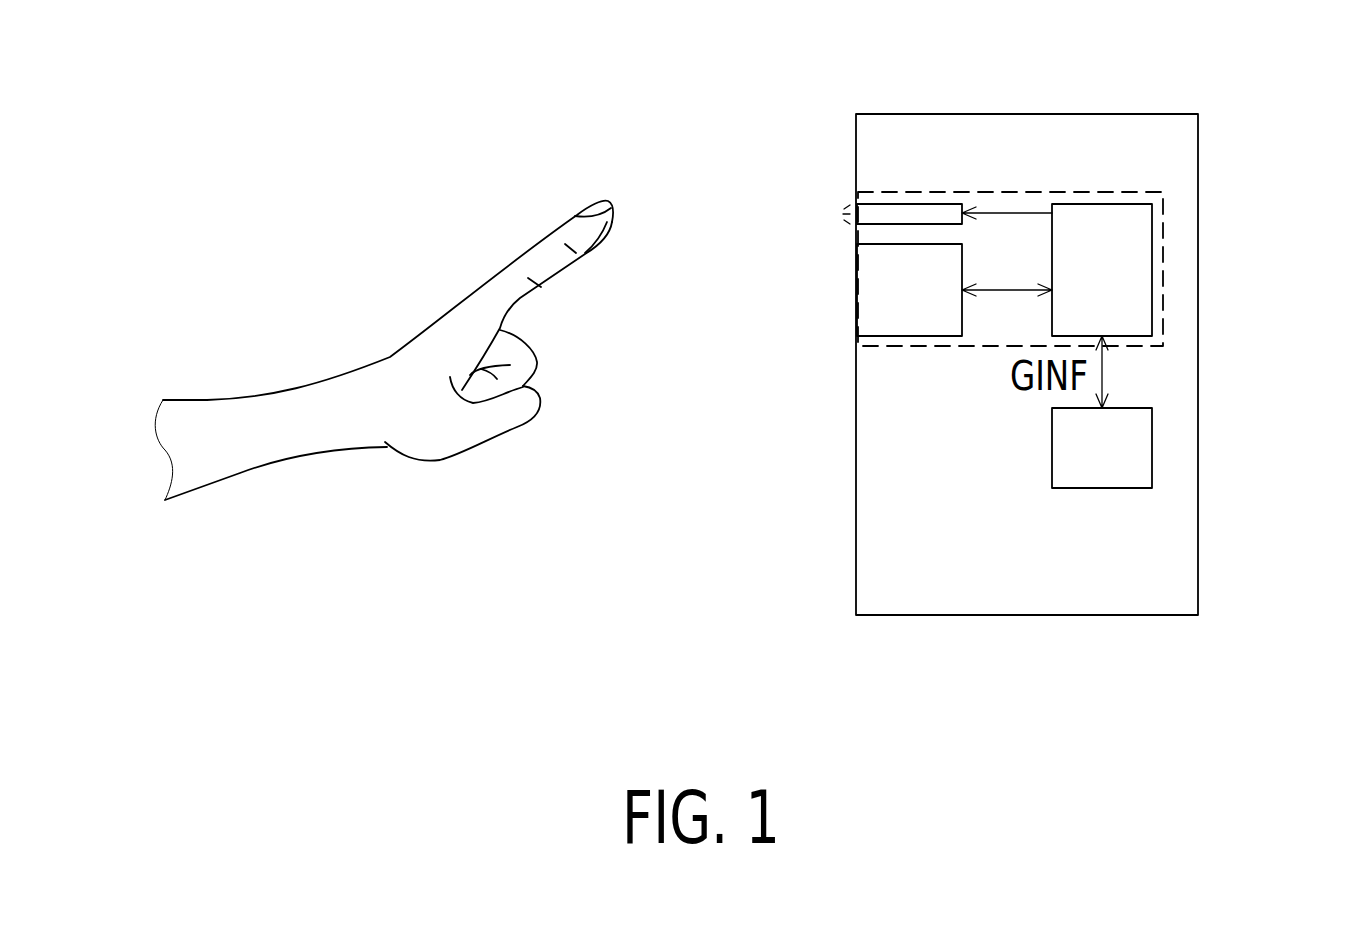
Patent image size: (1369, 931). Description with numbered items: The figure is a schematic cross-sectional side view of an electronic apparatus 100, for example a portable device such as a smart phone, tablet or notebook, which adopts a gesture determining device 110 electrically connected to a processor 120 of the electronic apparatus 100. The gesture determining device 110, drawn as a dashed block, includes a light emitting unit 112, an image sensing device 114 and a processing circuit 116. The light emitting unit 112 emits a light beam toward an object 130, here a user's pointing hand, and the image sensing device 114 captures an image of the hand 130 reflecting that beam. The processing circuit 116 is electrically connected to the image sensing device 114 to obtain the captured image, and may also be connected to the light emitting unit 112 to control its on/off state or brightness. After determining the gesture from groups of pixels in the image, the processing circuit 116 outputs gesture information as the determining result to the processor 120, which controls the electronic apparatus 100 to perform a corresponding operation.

The electronic apparatus 100 is at (1198, 142).
The gesture determining device 110 is at (1163, 222).
The light emitting unit 112 is at (910, 203).
The image sensing device 114 is at (908, 337).
The processing circuit 116 is at (1152, 268).
The processor 120 is at (1152, 447).
The object 130 is at (467, 225).